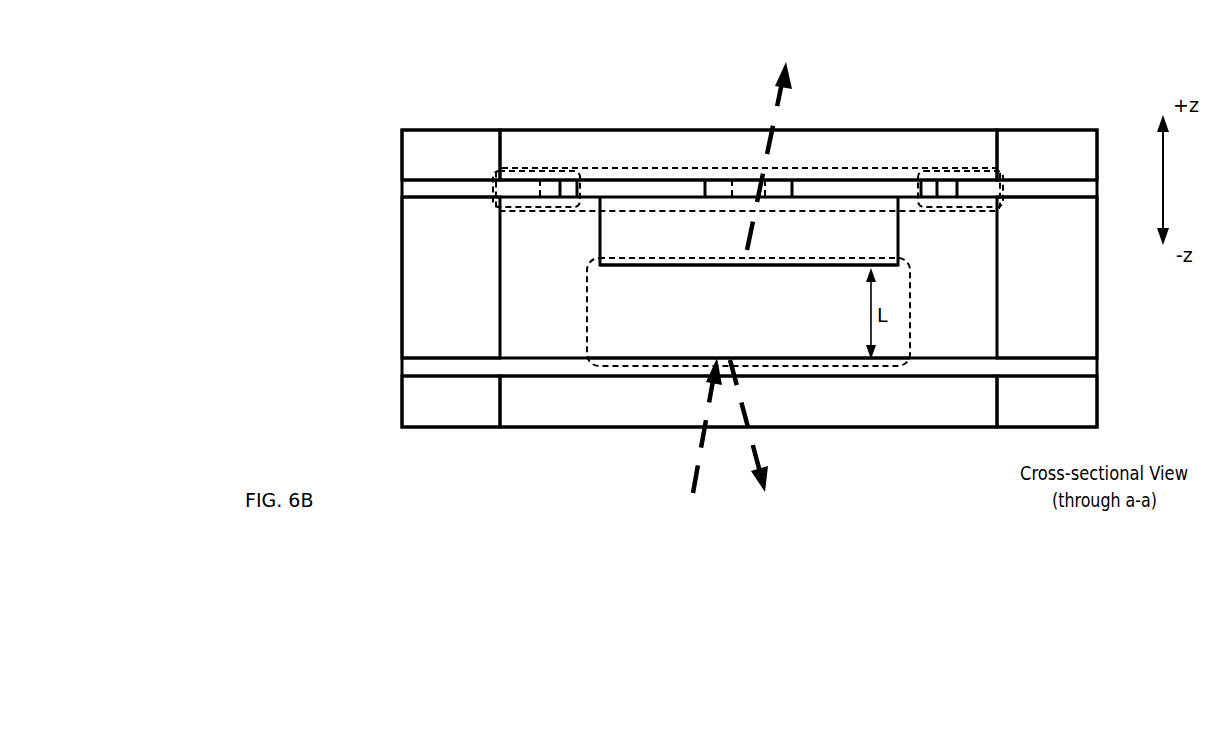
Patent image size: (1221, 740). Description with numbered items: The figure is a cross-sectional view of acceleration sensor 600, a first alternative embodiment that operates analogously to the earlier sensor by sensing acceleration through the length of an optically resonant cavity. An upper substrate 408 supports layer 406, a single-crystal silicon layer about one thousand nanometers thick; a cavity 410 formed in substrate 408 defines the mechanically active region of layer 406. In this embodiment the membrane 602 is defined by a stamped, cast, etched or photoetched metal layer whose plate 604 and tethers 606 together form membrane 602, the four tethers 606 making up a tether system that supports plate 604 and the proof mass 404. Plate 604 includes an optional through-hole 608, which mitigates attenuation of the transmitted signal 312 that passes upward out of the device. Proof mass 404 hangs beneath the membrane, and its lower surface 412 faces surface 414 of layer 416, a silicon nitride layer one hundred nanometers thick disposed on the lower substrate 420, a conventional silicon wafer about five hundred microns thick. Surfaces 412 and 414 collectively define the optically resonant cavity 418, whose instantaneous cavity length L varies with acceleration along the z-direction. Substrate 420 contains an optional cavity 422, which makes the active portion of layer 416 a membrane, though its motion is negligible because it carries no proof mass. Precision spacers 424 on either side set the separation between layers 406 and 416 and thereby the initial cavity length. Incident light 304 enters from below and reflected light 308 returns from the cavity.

The acceleration sensor 600 is at (292, 113).
The substrate 408 is at (749, 155).
The cavity 410 is at (748, 155).
The layer 406 is at (711, 204).
The spacers 424 is at (749, 277).
The layer 416 is at (711, 351).
The substrate 420 is at (749, 401).
The cavity 422 is at (748, 401).
The proof mass 404 is at (749, 231).
The surface 412 is at (749, 284).
The surface 414 is at (748, 340).
The optically resonant cavity 418 is at (711, 303).
The membrane 602 is at (748, 155).
The tethers 606 is at (756, 153).
The plate 604 is at (863, 148).
The through-hole 608 is at (820, 133).
The transmitted signal 312 is at (804, 144).
The incoming light beam 304 is at (669, 425).
The reflected light beam 308 is at (786, 438).